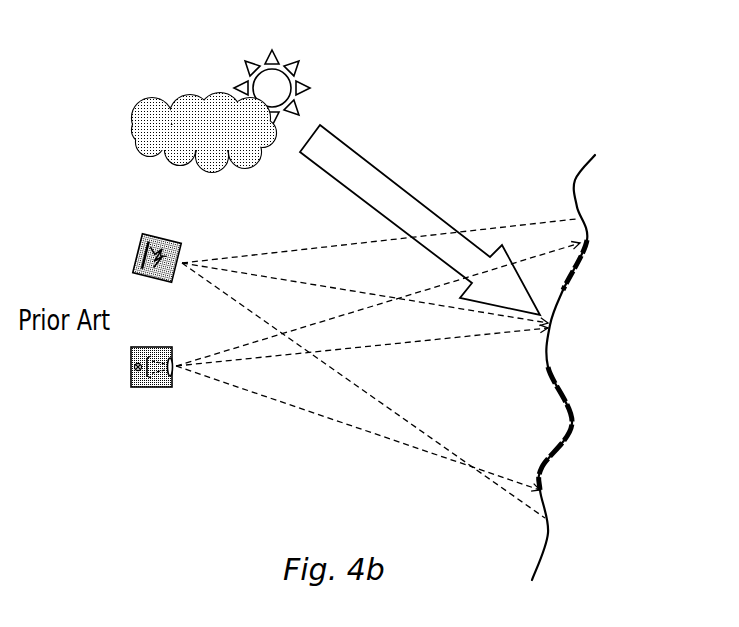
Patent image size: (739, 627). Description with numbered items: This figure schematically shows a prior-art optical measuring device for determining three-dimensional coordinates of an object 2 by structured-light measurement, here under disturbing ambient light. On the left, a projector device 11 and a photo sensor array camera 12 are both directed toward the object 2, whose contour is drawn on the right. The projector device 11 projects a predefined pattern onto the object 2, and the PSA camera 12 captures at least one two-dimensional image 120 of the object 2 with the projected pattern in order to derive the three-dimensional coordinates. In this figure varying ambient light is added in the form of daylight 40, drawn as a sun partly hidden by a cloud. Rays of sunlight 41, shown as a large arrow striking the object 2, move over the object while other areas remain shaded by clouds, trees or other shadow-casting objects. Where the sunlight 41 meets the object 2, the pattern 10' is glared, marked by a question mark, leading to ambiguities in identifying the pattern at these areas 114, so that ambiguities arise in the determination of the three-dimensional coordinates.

The daylight 40 is at (317, 88).
The rays of sunlight 41 is at (420, 220).
The object 2 is at (552, 367).
The areas 114 is at (608, 365).
The glared pattern 10' is at (594, 339).
The photo sensor array camera 12 is at (143, 243).
The projector device 11 is at (139, 387).
The 2D image 120 is at (379, 232).